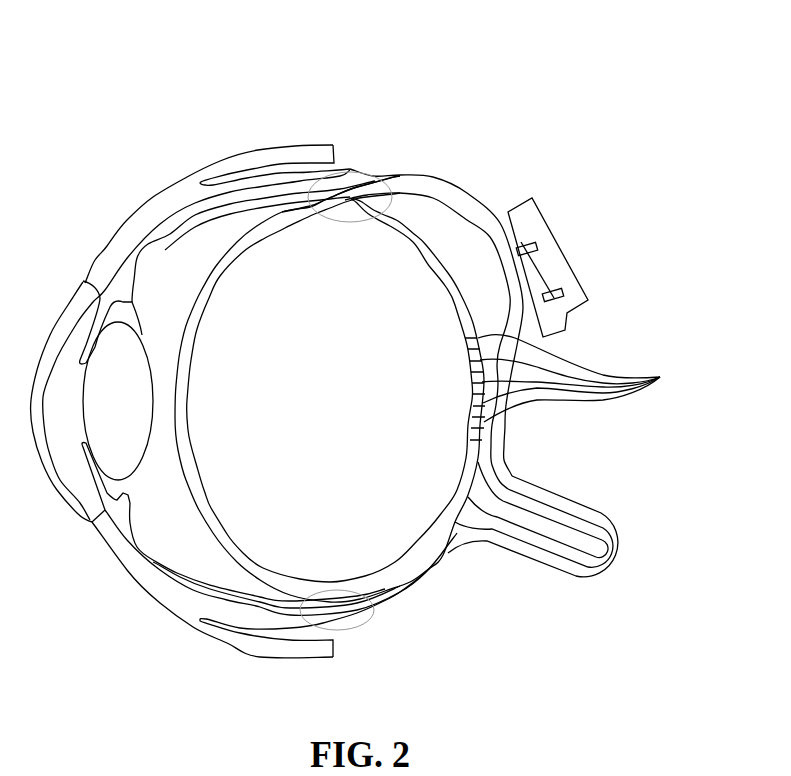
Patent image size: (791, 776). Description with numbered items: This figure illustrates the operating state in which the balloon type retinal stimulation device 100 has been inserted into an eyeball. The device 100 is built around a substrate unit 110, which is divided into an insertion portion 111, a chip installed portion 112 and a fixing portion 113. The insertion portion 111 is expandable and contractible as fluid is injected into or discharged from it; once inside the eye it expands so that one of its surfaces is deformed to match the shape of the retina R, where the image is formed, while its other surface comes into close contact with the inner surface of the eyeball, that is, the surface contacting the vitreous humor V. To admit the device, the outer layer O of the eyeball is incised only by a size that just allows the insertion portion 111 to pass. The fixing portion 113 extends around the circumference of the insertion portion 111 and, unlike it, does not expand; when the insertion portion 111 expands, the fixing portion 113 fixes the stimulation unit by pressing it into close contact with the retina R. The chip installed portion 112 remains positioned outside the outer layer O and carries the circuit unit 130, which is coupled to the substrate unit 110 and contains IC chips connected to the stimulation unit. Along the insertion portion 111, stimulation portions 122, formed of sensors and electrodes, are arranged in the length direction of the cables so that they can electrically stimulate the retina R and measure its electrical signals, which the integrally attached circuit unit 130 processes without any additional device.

The balloon type retinal stimulation device 100 is at (368, 113).
The substrate unit 110 is at (512, 56).
The insertion portion 111 is at (367, 182).
The chip installed portion 112 is at (432, 187).
The fixing portion 113 is at (357, 213).
The circuit unit 130 is at (560, 267).
The stimulation portions 122 is at (585, 378).
The outer layer O is at (325, 187).
The retina R is at (490, 432).
The vitreous humor V is at (182, 550).